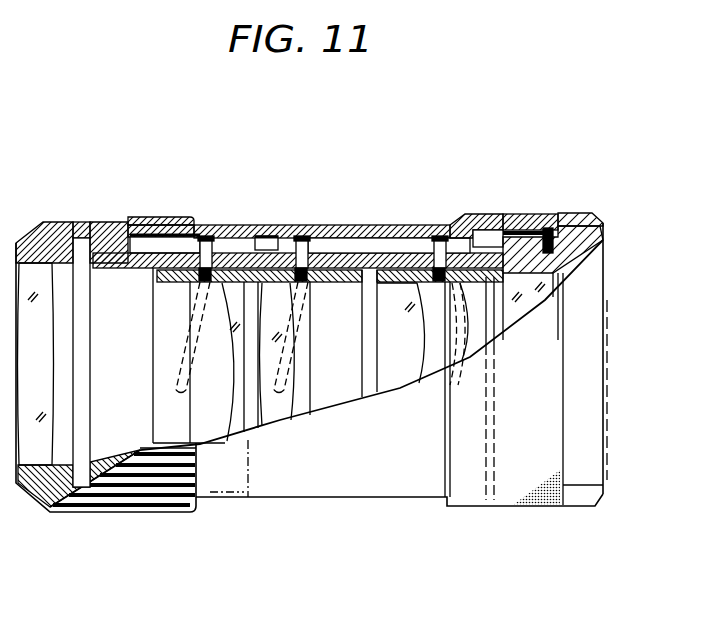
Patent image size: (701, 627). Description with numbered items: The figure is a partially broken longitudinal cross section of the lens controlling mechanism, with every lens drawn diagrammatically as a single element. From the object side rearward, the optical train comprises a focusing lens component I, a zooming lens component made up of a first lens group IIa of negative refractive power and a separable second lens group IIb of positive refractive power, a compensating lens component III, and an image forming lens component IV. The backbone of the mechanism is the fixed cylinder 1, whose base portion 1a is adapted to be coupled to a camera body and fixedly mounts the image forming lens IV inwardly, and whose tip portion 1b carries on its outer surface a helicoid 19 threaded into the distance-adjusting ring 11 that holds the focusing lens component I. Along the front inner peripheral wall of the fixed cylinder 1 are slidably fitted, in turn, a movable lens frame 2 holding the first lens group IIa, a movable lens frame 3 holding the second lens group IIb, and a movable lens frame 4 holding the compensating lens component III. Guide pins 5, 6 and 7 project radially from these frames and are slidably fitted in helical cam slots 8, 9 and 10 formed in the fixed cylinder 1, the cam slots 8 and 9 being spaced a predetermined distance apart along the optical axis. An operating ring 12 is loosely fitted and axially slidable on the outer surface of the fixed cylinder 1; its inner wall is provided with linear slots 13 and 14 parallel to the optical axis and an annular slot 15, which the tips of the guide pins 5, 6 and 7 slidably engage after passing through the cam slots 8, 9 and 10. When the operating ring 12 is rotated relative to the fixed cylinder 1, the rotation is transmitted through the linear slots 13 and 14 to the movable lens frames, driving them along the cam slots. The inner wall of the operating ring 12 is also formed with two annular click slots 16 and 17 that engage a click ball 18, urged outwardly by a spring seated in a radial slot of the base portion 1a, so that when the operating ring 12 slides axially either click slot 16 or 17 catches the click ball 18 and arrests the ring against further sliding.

The fixed cylinder 1 is at (400, 254).
The base portion of the fixed cylinder 1a is at (603, 247).
The tip portion of the fixed cylinder 1b is at (97, 253).
The movable lens frame 2 is at (243, 240).
The movable lens frame 3 is at (360, 258).
The movable lens frame 4 is at (382, 265).
The guide pin 5 is at (207, 238).
The guide pin 6 is at (300, 237).
The guide pin 7 is at (436, 237).
The helical cam slot 8 is at (195, 290).
The helical cam slot 9 is at (302, 291).
The helical cam slot 10 is at (463, 305).
The distance-adjusting ring 11 is at (125, 220).
The operating ring 12 is at (518, 222).
The linear slot 13 is at (173, 248).
The linear slot 14 is at (328, 248).
The annular slot 15 is at (266, 236).
The click slot 16 is at (497, 230).
The click slot 17 is at (548, 227).
The click ball 18 is at (562, 222).
The helicoid 19 is at (112, 247).
The focusing lens component I is at (44, 358).
The first lens group of the zooming lens component IIa is at (221, 345).
The second lens group of the zooming lens component IIb is at (289, 374).
The compensating lens component III is at (405, 344).
The image forming lens component IV is at (540, 303).